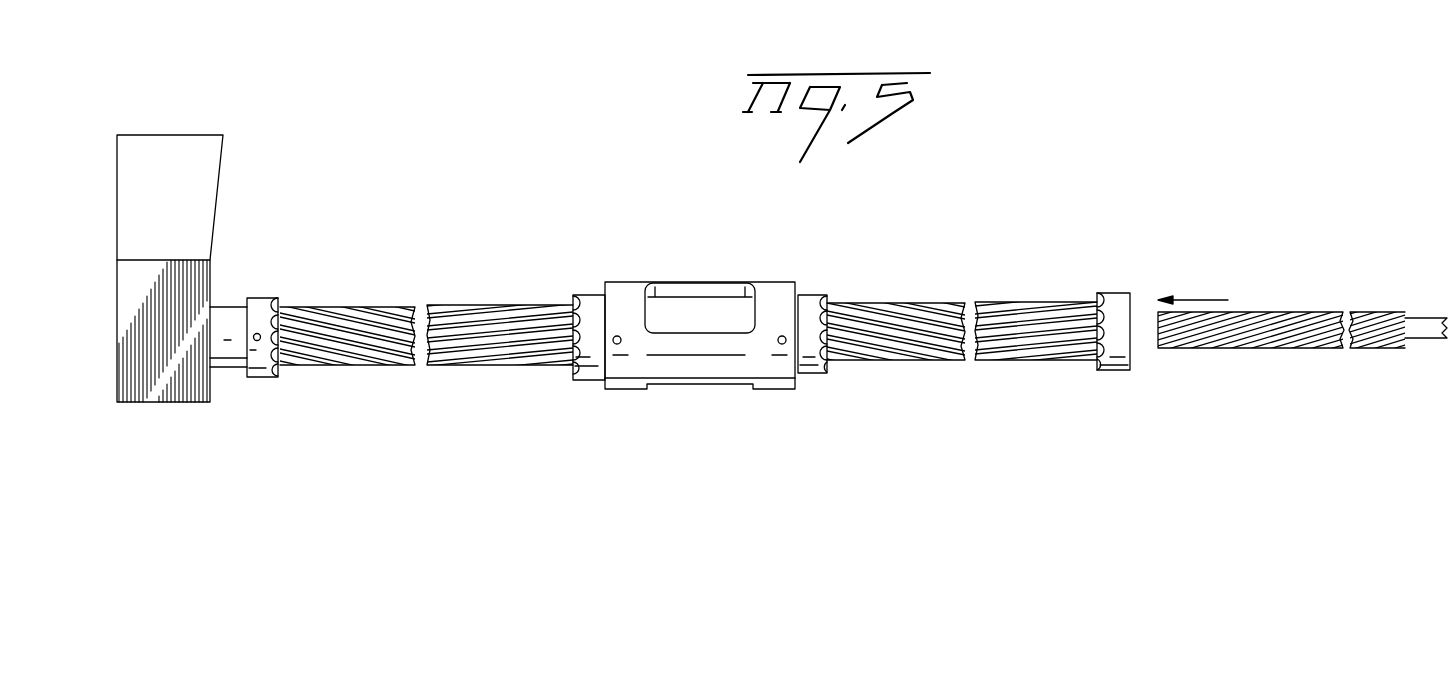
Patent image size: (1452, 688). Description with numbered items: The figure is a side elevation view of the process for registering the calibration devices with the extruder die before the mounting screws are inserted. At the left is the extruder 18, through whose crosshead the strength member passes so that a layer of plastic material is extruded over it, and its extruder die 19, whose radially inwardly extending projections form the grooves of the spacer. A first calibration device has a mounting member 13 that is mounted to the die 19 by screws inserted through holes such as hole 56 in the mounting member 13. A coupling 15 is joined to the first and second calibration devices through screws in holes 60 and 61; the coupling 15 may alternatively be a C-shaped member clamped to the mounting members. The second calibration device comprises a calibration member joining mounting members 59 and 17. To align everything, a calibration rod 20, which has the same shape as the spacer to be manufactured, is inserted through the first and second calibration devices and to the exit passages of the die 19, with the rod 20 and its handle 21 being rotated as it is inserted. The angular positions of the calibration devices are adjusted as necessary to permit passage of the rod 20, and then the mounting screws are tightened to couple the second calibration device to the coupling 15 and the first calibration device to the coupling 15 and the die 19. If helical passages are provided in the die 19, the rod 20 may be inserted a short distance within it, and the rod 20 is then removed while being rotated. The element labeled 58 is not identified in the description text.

The mounting member 13 is at (267, 300).
The coupling 15 is at (775, 282).
The mounting member 17 is at (1115, 297).
The extruder 18 is at (201, 134).
The extruder die 19 is at (225, 307).
The calibration rod 20 is at (1365, 318).
The handle 21 is at (1423, 322).
The hole 56 is at (259, 341).
The ferrule 58 is at (597, 295).
The mounting member 59 is at (810, 293).
The hole 60 is at (615, 344).
The hole 61 is at (781, 344).